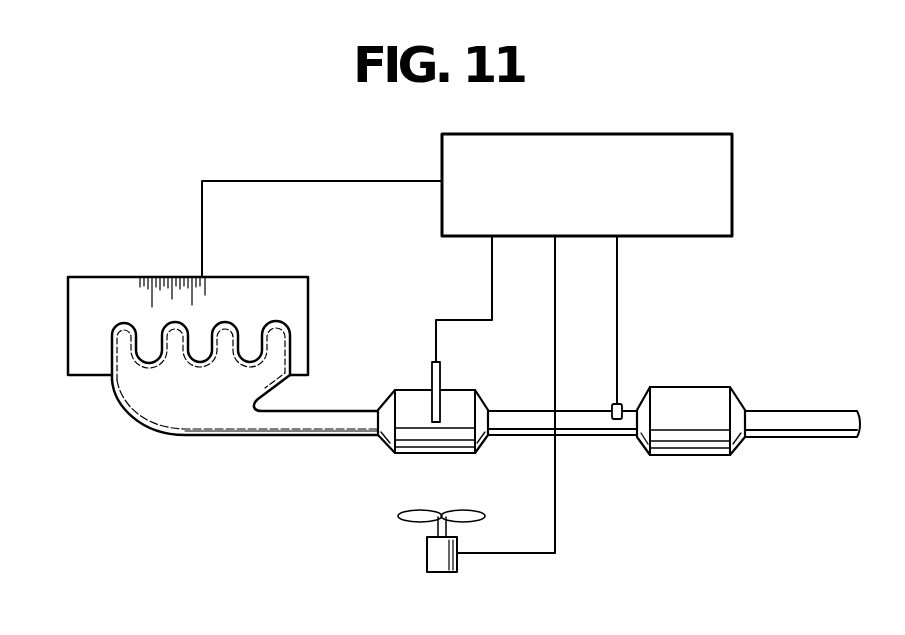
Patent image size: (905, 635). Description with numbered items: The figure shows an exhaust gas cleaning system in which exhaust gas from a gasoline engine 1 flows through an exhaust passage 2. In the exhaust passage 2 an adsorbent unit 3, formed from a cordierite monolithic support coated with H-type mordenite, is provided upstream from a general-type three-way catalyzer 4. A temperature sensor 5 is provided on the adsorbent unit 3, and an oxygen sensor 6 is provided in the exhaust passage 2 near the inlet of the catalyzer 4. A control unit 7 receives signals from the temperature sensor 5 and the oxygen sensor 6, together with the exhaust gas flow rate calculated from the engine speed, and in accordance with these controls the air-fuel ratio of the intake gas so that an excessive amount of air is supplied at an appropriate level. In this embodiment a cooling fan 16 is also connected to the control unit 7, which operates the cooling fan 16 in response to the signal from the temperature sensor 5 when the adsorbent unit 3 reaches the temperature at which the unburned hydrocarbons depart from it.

The gasoline engine 1 is at (112, 287).
The exhaust passage 2 is at (300, 426).
The adsorbent unit 3 is at (410, 452).
The catalyzer 4 is at (677, 455).
The temperature sensor 5 is at (431, 368).
The oxygen sensor 6 is at (619, 404).
The control unit 7 is at (732, 160).
The cooling fan 16 is at (432, 548).